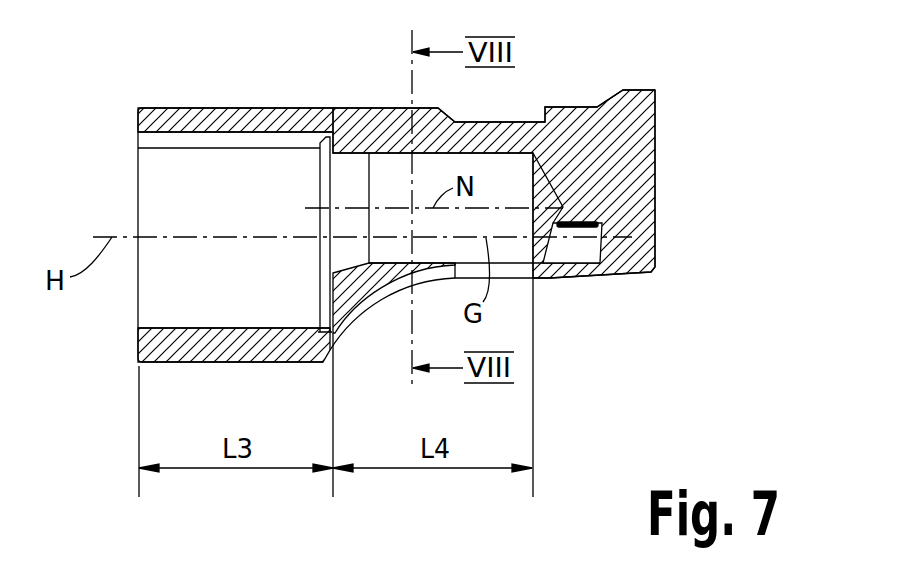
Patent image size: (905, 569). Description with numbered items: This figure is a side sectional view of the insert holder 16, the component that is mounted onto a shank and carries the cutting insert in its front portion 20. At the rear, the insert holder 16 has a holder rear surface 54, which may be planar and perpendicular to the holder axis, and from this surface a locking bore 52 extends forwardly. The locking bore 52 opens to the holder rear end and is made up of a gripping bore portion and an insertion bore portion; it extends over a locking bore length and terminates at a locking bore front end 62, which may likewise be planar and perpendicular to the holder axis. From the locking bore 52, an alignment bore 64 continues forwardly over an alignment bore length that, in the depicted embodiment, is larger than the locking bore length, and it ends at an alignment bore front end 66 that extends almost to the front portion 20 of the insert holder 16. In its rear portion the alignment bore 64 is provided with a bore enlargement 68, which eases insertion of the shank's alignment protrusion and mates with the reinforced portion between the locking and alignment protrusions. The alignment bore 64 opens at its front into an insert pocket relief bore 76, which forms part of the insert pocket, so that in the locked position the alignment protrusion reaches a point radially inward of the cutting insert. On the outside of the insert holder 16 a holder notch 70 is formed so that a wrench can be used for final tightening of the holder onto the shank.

The insert holder 16 is at (645, 44).
The front portion 20 is at (641, 301).
The locking bore 52 is at (164, 168).
The holder rear surface 54 is at (133, 340).
The locking bore front end 62 is at (328, 306).
The alignment bore 64 is at (392, 175).
The alignment bore front end 66 is at (530, 172).
The bore enlargement 68 is at (357, 152).
The holder notch 70 is at (470, 122).
The insert pocket relief bore 76 is at (573, 258).